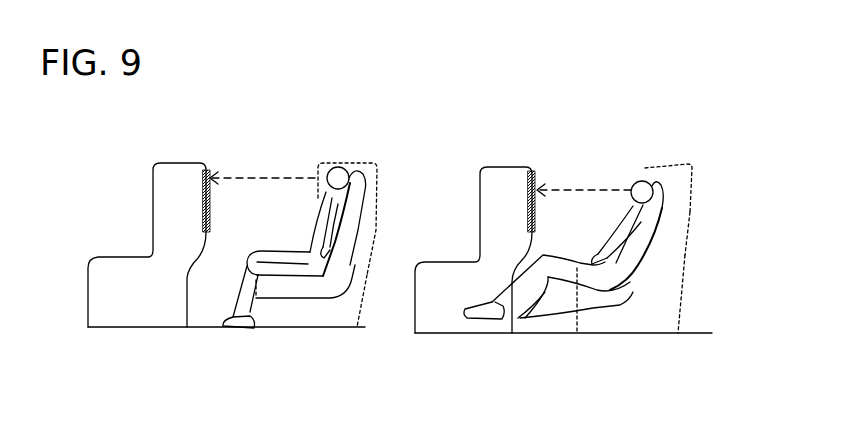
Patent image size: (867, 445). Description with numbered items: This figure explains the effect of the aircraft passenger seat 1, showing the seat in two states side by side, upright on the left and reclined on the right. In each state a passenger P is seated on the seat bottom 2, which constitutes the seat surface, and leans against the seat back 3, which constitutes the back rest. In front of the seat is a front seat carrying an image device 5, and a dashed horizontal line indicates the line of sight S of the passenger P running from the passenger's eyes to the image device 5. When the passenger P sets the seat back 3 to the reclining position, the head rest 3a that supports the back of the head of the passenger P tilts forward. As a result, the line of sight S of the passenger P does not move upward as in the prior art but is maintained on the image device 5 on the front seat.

The passenger seat 1 is at (138, 297).
The seat bottom 2 is at (290, 287).
The seat back 3 is at (343, 222).
The head rest 3a is at (668, 195).
The image device 5 is at (212, 196).
The line of sight S is at (274, 178).
The passenger P is at (339, 166).